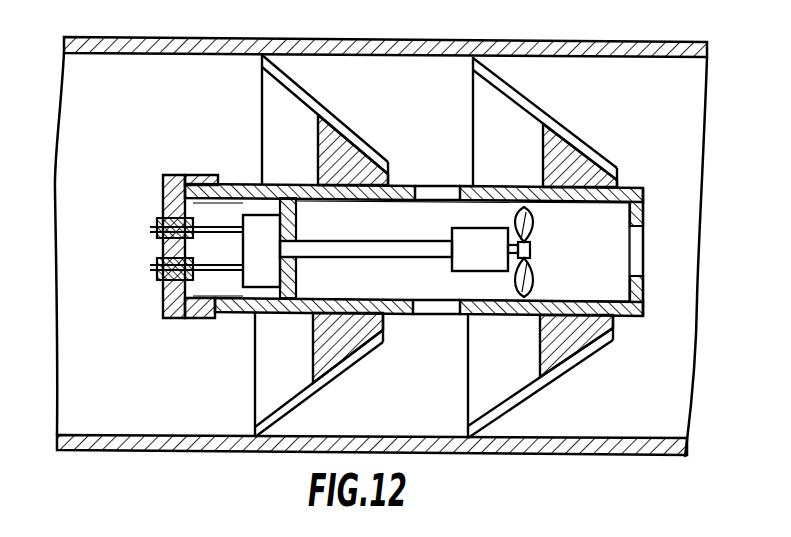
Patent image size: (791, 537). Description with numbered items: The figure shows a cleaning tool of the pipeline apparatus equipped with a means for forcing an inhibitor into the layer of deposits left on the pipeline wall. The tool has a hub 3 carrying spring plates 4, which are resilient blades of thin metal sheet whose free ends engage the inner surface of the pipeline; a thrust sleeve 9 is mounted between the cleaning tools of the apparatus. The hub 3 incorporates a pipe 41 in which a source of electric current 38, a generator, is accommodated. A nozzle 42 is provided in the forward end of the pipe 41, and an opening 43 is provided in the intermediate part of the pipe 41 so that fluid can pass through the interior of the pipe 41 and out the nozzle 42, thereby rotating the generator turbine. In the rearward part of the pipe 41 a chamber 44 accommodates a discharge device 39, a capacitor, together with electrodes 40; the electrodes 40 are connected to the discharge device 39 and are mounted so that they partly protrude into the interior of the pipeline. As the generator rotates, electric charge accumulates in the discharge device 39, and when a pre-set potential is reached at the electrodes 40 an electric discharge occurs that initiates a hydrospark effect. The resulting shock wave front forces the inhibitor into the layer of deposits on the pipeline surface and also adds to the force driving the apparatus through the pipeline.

The hub 3 is at (563, 150).
The spring plates 4 is at (434, 375).
The thrust sleeve 9 is at (368, 249).
The source of electric current 38 is at (523, 205).
The discharge device 39 is at (265, 222).
The electrodes 40 is at (159, 262).
The pipe 41 is at (530, 304).
The nozzle 42 is at (637, 250).
The opening 43 is at (436, 185).
The chamber 44 is at (193, 176).